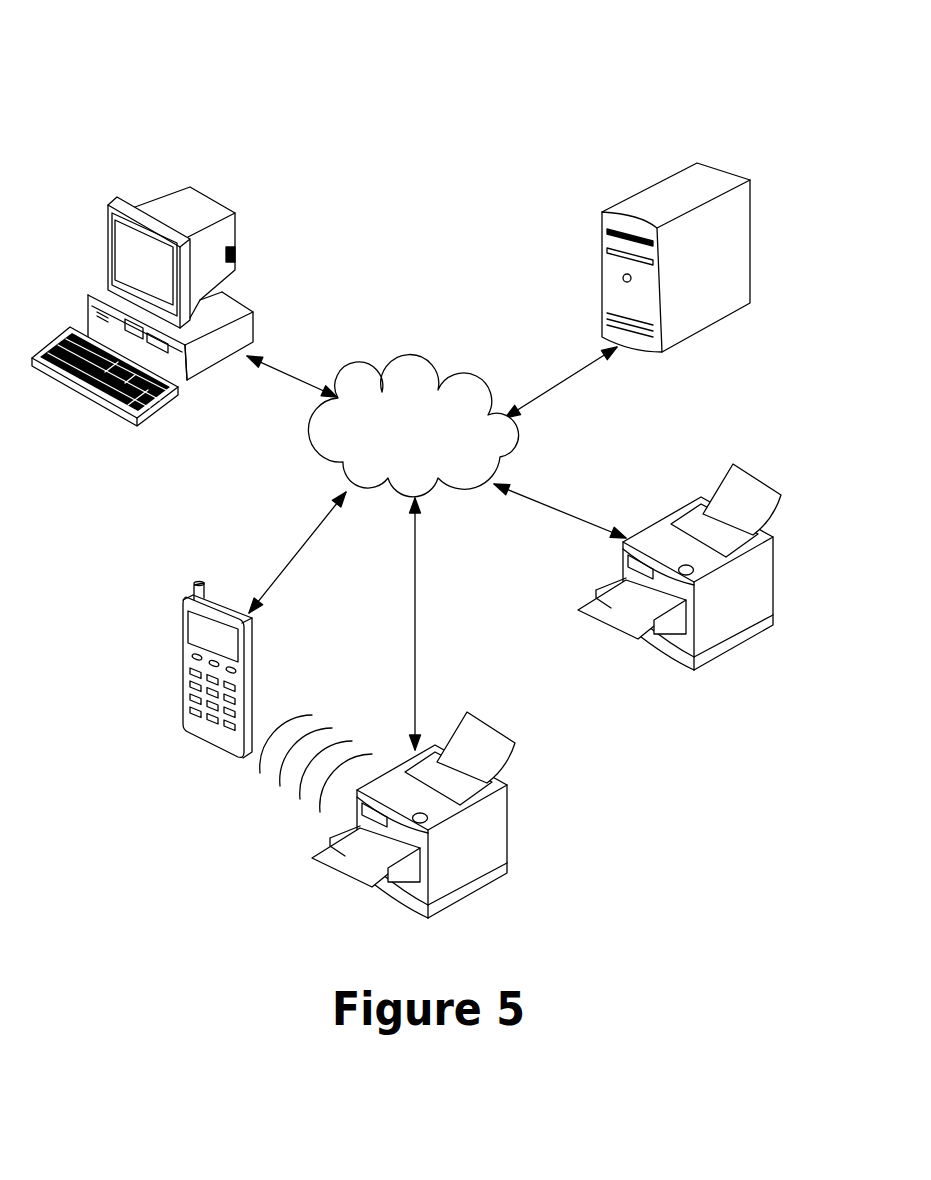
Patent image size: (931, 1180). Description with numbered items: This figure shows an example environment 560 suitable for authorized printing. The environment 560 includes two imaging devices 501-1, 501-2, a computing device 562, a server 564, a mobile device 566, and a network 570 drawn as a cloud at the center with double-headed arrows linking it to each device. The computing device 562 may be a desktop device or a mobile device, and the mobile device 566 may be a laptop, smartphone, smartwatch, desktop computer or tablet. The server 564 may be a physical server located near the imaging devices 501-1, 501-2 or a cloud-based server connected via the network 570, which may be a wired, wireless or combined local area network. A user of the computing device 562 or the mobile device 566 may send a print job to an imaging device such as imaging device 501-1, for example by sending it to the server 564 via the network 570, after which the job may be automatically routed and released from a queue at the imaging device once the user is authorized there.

The environment 560 is at (182, 108).
The computing device 562 is at (100, 290).
The server 564 is at (602, 275).
The mobile device 566 is at (183, 673).
The network 570 is at (415, 390).
The imaging device 501-1 is at (507, 827).
The imaging device 501-2 is at (773, 578).